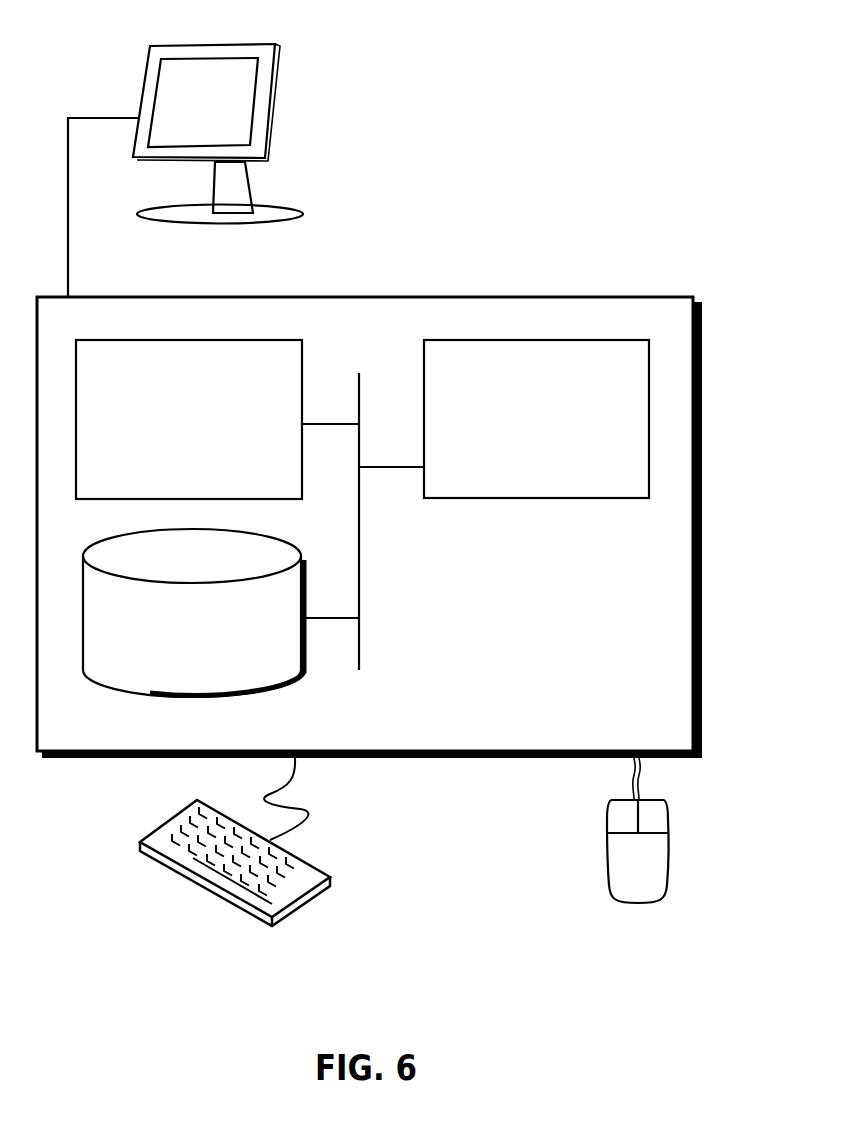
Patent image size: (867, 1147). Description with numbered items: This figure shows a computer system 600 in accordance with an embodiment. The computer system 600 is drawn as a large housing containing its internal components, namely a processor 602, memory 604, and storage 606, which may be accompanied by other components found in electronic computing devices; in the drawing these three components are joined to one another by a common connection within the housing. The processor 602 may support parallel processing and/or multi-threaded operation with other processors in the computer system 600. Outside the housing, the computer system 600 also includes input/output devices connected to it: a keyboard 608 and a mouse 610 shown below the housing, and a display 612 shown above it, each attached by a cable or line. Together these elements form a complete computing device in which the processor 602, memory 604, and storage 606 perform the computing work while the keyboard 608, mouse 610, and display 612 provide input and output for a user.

The computer system 600 is at (413, 277).
The processor 602 is at (518, 432).
The memory 604 is at (168, 431).
The storage 606 is at (175, 642).
The keyboard 608 is at (158, 863).
The mouse 610 is at (616, 873).
The display 612 is at (185, 170).